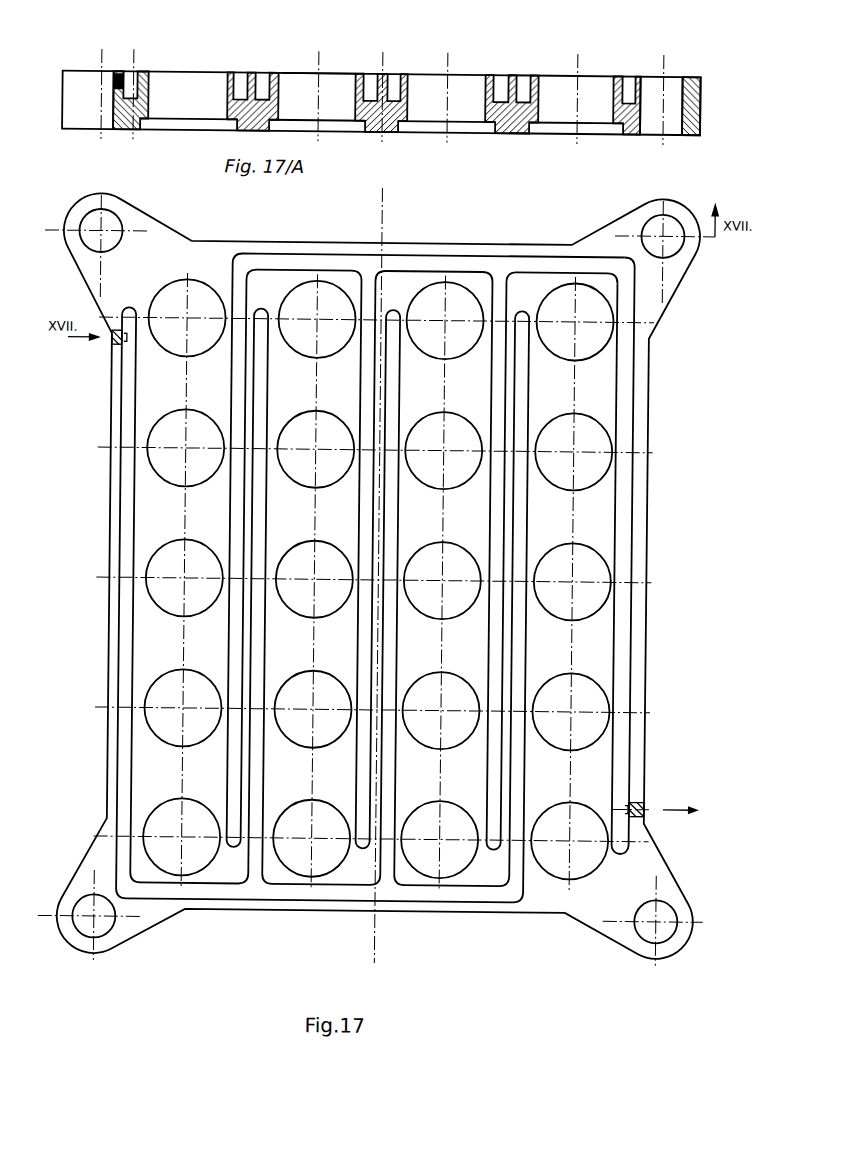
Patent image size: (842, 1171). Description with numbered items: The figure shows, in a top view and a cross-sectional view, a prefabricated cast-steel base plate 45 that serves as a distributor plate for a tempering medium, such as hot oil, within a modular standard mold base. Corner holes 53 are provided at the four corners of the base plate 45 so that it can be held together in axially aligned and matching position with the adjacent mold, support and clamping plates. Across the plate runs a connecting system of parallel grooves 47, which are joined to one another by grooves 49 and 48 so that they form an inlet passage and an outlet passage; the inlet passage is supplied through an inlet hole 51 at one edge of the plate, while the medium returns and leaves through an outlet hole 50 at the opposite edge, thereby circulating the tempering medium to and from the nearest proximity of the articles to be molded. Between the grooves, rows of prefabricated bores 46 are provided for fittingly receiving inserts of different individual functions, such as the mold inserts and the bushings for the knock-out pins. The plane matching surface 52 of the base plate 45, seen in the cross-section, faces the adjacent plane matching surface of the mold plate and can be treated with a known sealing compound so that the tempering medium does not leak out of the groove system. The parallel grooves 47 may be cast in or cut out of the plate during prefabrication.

In FIG. 17A, the base plate 45 is at (689, 74).
In FIG. 17, the base plate 45 is at (622, 228).
In FIG. 17A, the prefabricated bores 46 is at (581, 83).
In FIG. 17, the prefabricated bores 46 is at (598, 327).
In FIG. 17A, the parallel grooves 47 is at (516, 78).
In FIG. 17, the parallel grooves 47 is at (625, 489).
In FIG. 17, the connecting groove 48 is at (455, 259).
In FIG. 17, the connecting groove 49 is at (345, 885).
In FIG. 17, the outlet hole 50 is at (648, 794).
In FIG. 17, the inlet hole 51 is at (113, 343).
In FIG. 17A, the plane matching surface 52 is at (323, 70).
In FIG. 17A, the corner holes 53 is at (667, 119).
In FIG. 17, the corner holes 53 is at (670, 221).